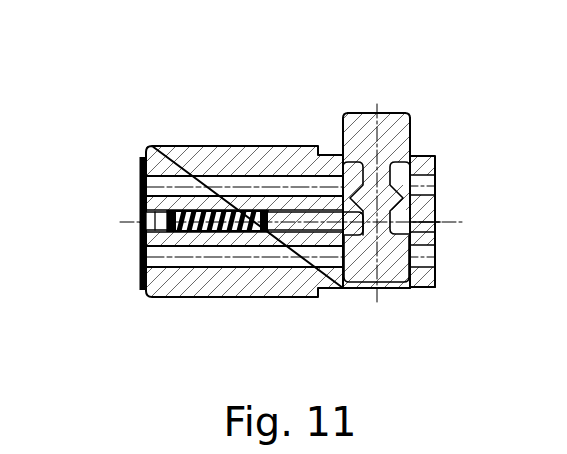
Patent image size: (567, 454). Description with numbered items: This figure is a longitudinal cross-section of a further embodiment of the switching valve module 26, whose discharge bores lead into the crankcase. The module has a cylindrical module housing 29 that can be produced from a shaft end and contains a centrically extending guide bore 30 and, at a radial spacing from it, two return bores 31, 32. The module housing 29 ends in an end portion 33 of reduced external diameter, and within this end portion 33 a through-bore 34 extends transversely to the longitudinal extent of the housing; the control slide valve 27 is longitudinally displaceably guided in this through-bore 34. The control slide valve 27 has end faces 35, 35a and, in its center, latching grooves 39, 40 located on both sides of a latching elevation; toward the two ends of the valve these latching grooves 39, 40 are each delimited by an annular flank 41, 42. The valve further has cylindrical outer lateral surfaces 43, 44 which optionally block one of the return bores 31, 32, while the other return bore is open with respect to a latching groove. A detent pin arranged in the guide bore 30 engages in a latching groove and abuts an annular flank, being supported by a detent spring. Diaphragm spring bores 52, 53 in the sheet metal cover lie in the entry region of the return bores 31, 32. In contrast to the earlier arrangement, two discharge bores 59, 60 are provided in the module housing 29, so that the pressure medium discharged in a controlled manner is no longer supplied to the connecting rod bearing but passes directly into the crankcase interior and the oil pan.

The switching valve module 26 is at (212, 144).
The control slide valve 27 is at (401, 114).
The module housing 29 is at (152, 162).
The guide bore 30 is at (237, 236).
The return bore 31 is at (206, 178).
The return bore 32 is at (180, 262).
The end portion 33 is at (430, 278).
The through-bore 34 is at (424, 167).
The end face 35 is at (363, 113).
The end face 35a is at (383, 292).
The latching groove 39 is at (400, 167).
The latching groove 40 is at (418, 225).
The annular flank 41 is at (352, 162).
The annular flank 42 is at (404, 284).
The cylindrical outer lateral surface 43 is at (412, 140).
The cylindrical outer lateral surface 44 is at (430, 235).
The diaphragm spring bore 52 is at (140, 186).
The diaphragm spring bore 53 is at (140, 260).
The discharge bore 59 is at (424, 191).
The discharge bore 60 is at (430, 255).